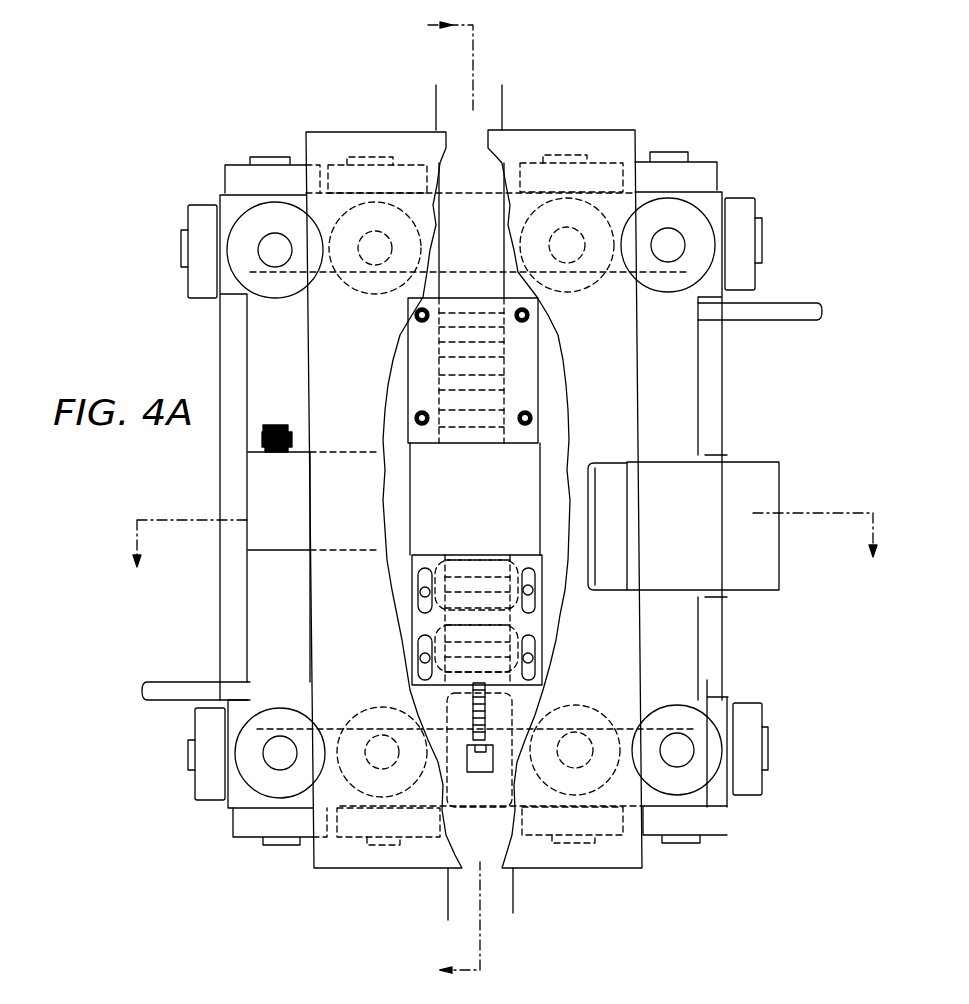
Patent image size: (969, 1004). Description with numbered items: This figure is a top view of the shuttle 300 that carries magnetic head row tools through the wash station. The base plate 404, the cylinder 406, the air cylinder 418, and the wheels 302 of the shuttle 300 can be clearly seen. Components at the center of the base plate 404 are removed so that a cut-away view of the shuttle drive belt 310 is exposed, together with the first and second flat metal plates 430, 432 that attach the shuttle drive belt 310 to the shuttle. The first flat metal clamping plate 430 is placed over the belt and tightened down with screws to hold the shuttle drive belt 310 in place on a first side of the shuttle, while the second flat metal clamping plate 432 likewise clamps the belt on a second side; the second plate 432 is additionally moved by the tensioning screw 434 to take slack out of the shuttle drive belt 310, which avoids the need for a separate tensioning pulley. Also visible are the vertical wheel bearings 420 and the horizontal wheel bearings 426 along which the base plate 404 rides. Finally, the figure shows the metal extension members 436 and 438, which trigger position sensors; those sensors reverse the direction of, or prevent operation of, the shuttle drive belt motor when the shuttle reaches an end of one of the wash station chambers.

The shuttle 300 is at (682, 88).
The wheels 302 is at (195, 207).
The shuttle drive belt 310 is at (487, 93).
The base plate 404 is at (348, 865).
The cylinder 406 is at (752, 462).
The air cylinder 418 is at (265, 530).
The vertical wheel bearings 420 is at (252, 828).
The horizontal wheel bearings 426 is at (252, 777).
The first flat metal clamping plate 430 is at (413, 350).
The second flat metal clamping plate 432 is at (418, 633).
The tensioning screw 434 is at (473, 763).
The metal extension member 436 is at (160, 692).
The metal extension member 438 is at (785, 322).